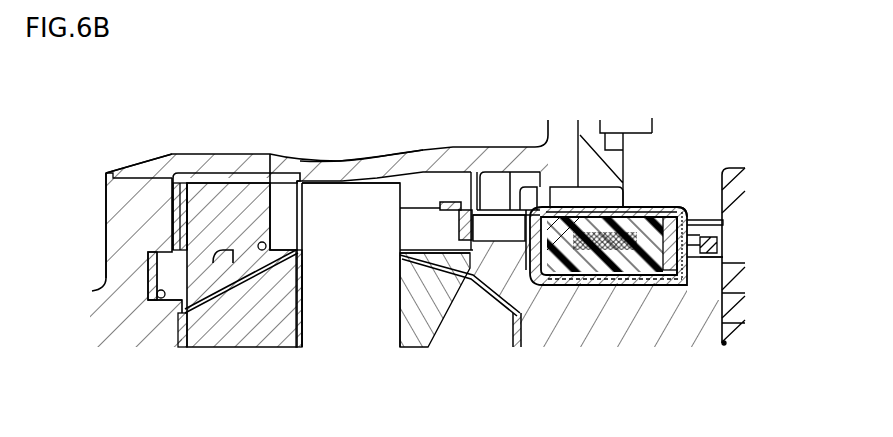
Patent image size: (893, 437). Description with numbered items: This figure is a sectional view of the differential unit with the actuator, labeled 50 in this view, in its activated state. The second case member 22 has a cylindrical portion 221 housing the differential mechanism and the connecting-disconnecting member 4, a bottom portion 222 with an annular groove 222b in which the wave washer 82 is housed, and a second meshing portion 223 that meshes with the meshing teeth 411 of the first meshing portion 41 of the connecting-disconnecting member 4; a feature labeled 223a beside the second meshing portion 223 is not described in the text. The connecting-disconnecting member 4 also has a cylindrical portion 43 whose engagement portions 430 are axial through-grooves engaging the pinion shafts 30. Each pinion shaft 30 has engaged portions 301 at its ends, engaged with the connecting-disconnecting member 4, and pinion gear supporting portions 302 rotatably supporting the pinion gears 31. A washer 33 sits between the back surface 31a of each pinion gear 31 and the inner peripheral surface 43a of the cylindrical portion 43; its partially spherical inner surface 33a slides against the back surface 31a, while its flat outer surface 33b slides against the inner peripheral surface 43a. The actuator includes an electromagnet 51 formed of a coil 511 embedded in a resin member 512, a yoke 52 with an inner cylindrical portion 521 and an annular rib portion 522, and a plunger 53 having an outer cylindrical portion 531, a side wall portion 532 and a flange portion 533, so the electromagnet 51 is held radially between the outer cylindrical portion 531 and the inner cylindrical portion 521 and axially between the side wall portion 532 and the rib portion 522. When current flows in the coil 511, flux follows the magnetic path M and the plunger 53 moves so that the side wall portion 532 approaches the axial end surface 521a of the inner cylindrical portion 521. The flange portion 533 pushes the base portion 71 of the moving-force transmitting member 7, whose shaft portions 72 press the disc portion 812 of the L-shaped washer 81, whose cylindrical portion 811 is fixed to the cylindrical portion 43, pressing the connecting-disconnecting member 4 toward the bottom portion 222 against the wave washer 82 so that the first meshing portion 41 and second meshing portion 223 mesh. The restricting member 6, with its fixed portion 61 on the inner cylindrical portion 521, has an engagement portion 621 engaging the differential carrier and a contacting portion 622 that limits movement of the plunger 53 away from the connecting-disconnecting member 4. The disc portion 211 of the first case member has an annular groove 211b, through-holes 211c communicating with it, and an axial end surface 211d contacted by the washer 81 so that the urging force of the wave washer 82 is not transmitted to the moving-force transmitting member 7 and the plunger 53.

The second case member 22 is at (108, 147).
The cylindrical portion 221 is at (377, 158).
The bottom portion 222 is at (117, 218).
The annular groove 222b is at (150, 302).
The second meshing portion 223 is at (170, 172).
The housing groove 223a is at (173, 179).
The disc portion 211 is at (700, 320).
The annular groove 211b is at (625, 188).
The through-holes 211c is at (503, 233).
The axial end surface 211d is at (473, 200).
The pinion shaft 30 is at (342, 180).
The engaged portions 301 is at (360, 220).
The pinion gear supporting portions 302 is at (361, 337).
The pinion gear 31 is at (413, 317).
The back surface 31a is at (397, 283).
The washer 33 is at (230, 280).
The inner surface 33a is at (253, 263).
The outer surface 33b is at (300, 253).
The connecting-disconnecting member 4 is at (208, 183).
The first meshing portion 41 is at (182, 178).
The meshing teeth 411 is at (182, 208).
The cylindrical portion 43 is at (233, 187).
The engagement portions 430 is at (287, 187).
The inner peripheral surface 43a is at (443, 283).
The motor 50 is at (660, 245).
The electromagnet 51 is at (605, 315).
The coil 511 is at (597, 265).
The resin member 512 is at (622, 265).
The yoke 52 is at (680, 286).
The inner cylindrical portion 521 is at (643, 283).
The axial end surface 521a is at (688, 277).
The rib portion 522 is at (536, 245).
The plunger 53 is at (662, 205).
The outer cylindrical portion 531 is at (623, 208).
The side wall portion 532 is at (690, 212).
The flange portion 533 is at (542, 205).
The magnetic path M is at (677, 210).
The restricting member 6 is at (736, 265).
The fixed portion 61 is at (673, 250).
The engagement portion 621 is at (703, 226).
The contacting portion 622 is at (720, 240).
The moving-force transmitting member 7 is at (513, 210).
The base portion 71 is at (530, 195).
The shaft portions 72 is at (493, 208).
The washer 81 is at (428, 145).
The cylindrical portion 811 is at (450, 204).
The disc portion 812 is at (463, 212).
The wave washer 82 is at (160, 267).